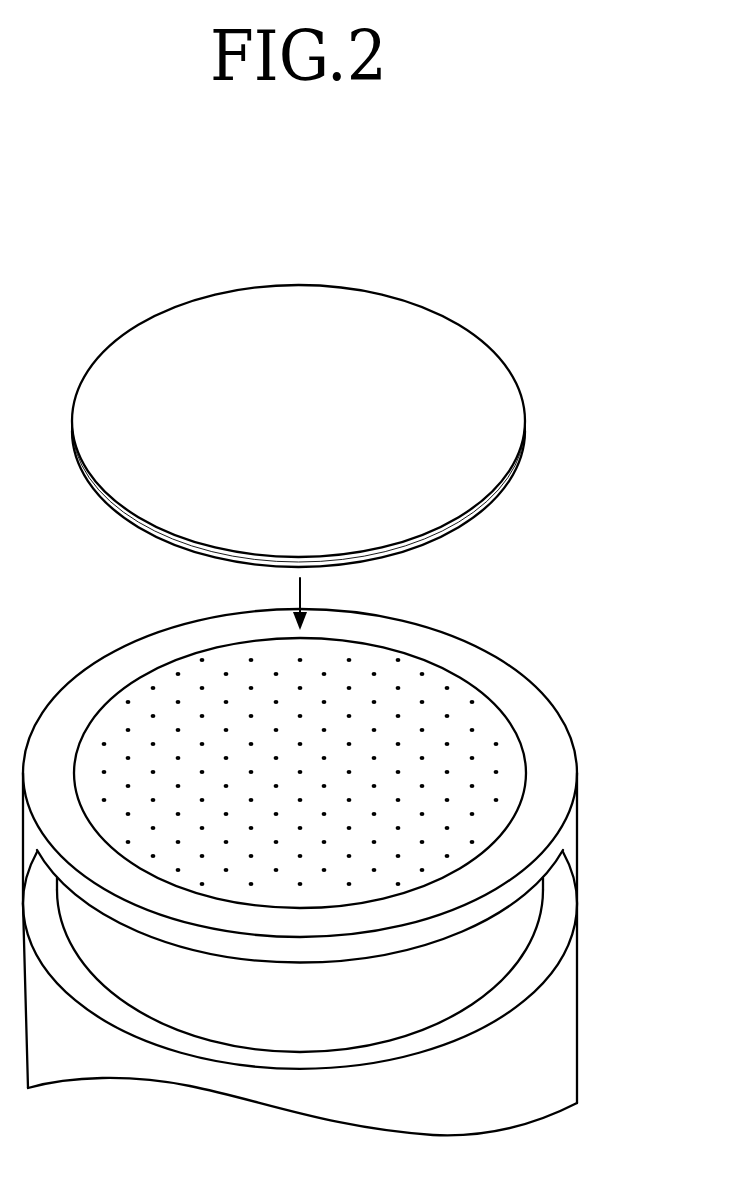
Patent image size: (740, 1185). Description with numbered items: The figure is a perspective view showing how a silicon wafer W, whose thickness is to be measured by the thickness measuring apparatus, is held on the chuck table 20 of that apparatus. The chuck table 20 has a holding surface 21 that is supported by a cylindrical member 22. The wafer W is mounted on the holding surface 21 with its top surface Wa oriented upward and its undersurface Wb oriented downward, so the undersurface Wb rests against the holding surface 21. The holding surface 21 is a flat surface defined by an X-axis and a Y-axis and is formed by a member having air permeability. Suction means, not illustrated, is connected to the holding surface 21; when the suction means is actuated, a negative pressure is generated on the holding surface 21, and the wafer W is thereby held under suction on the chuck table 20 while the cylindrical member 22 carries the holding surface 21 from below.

The wafer W is at (319, 415).
The top surface Wa is at (436, 332).
The undersurface Wb is at (462, 532).
The chuck table 20 is at (359, 872).
The holding surface 21 is at (498, 746).
The cylindrical member 22 is at (567, 1037).